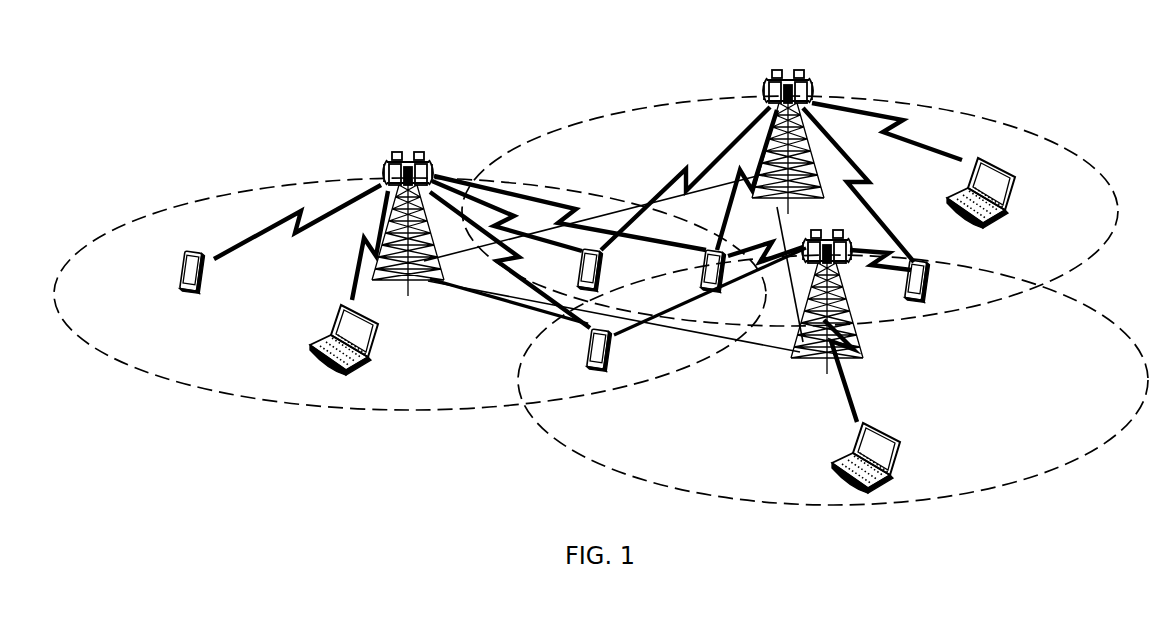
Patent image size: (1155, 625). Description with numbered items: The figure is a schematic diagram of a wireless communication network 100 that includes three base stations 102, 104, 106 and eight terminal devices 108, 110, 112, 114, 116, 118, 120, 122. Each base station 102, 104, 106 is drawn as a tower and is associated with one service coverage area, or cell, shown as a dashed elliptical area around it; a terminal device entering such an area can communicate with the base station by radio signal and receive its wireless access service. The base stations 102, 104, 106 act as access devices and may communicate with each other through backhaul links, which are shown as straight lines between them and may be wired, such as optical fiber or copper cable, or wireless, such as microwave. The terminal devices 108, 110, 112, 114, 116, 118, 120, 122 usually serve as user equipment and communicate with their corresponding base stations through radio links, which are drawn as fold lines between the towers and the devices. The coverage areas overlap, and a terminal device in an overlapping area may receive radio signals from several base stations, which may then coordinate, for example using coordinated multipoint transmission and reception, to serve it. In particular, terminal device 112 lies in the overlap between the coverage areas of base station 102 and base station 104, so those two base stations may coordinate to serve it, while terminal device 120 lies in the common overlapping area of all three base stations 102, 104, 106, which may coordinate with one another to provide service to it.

The wireless communication network 100 is at (601, 265).
The base station 102 is at (400, 154).
The base station 104 is at (828, 231).
The base station 106 is at (793, 72).
The terminal device 108 is at (209, 278).
The terminal device 110 is at (381, 326).
The terminal device 112 is at (590, 347).
The terminal device 114 is at (900, 446).
The terminal device 116 is at (934, 278).
The terminal device 118 is at (1017, 181).
The terminal device 120 is at (703, 289).
The terminal device 122 is at (605, 267).